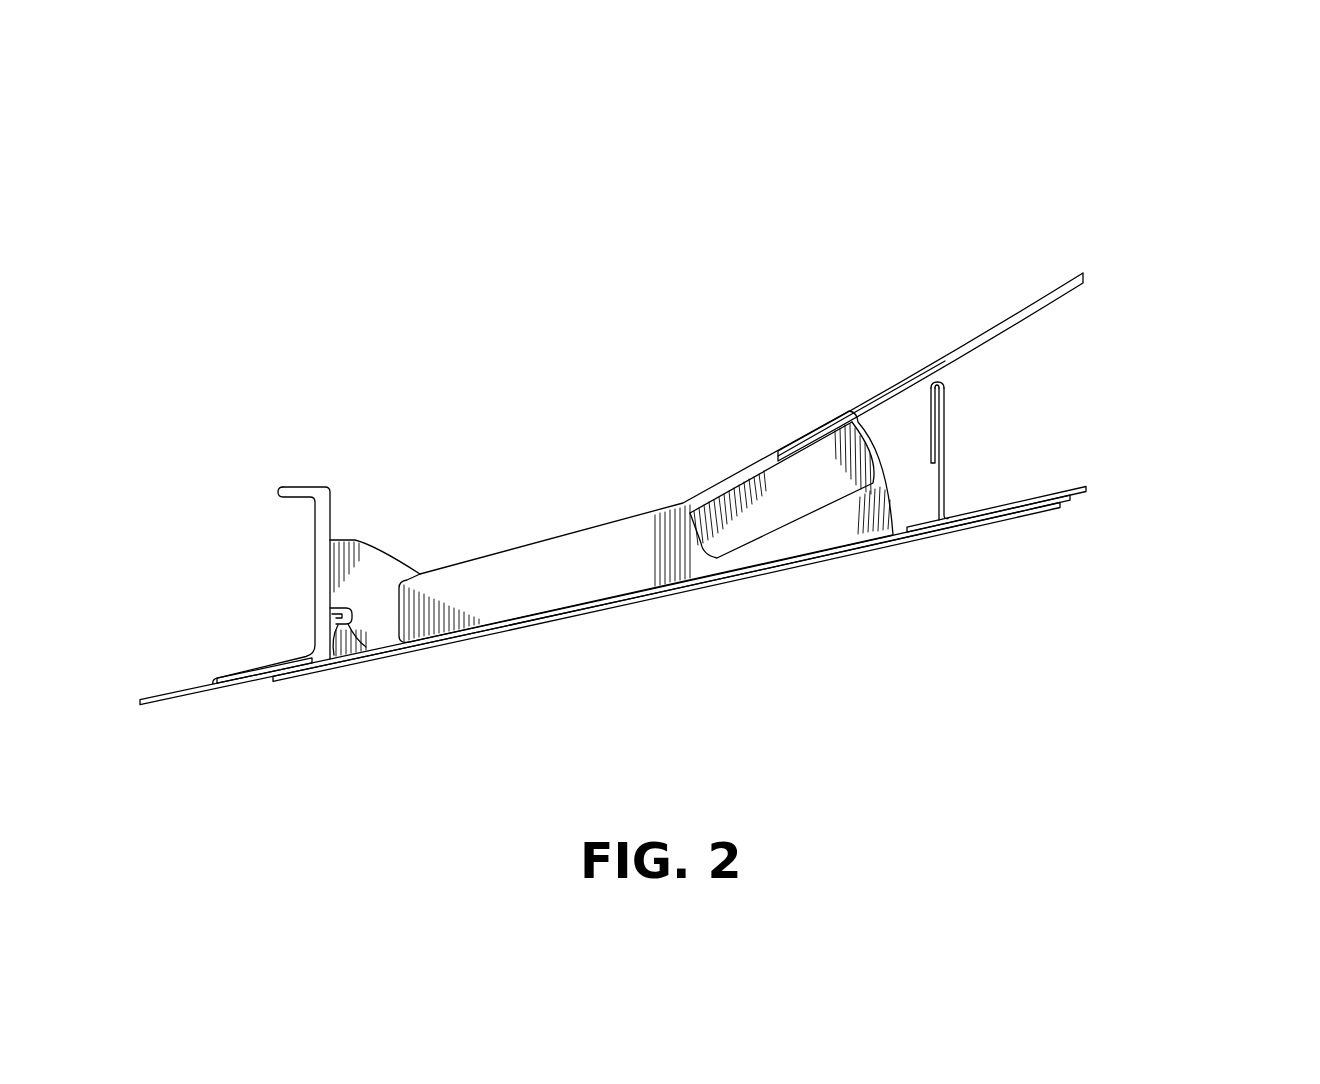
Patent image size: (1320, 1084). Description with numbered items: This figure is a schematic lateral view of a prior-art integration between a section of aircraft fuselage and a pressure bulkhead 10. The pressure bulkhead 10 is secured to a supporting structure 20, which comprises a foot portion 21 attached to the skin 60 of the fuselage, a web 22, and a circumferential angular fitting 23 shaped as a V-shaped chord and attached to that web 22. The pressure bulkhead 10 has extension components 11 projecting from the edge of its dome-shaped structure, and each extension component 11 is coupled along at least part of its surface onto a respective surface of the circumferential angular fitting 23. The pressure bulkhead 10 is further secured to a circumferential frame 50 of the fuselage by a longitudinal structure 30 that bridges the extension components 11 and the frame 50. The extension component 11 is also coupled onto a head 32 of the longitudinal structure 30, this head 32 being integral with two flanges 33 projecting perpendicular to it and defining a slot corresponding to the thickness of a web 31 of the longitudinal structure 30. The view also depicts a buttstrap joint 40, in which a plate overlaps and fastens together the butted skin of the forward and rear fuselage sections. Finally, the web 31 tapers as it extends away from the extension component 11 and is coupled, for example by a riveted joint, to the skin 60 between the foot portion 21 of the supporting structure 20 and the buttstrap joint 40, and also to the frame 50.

The pressure bulkhead 10 is at (930, 290).
The extension component 11 is at (895, 392).
The supporting structure 20 is at (984, 408).
The foot portion 21 is at (992, 503).
The web 22 is at (948, 415).
The circumferential angular fitting 23 is at (930, 433).
The longitudinal structure 30 is at (611, 586).
The web 31 is at (625, 567).
The head 32 is at (717, 489).
The flange 33 is at (797, 493).
The buttstrap joint 40 is at (244, 683).
The frame 50 is at (293, 487).
The skin 60 is at (975, 550).